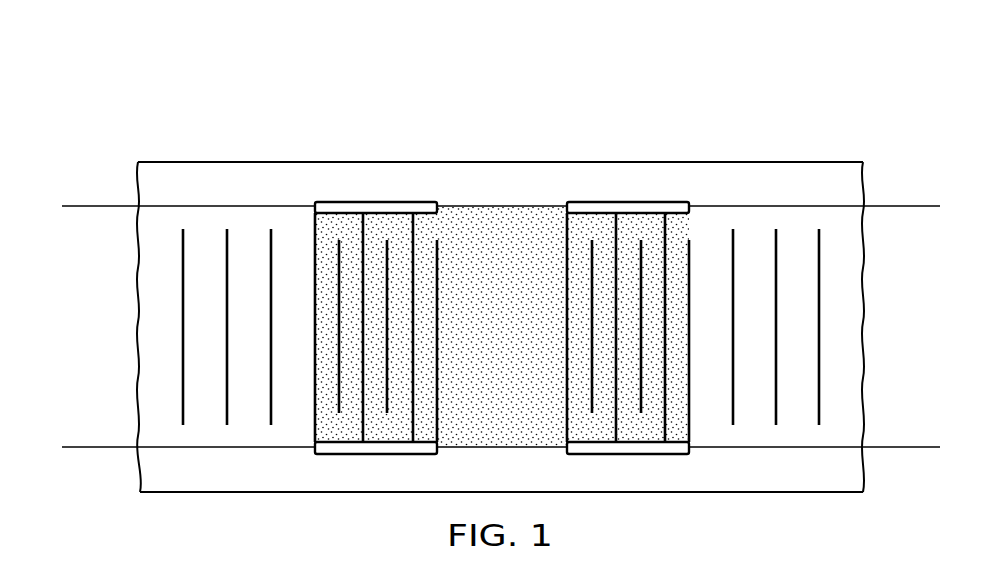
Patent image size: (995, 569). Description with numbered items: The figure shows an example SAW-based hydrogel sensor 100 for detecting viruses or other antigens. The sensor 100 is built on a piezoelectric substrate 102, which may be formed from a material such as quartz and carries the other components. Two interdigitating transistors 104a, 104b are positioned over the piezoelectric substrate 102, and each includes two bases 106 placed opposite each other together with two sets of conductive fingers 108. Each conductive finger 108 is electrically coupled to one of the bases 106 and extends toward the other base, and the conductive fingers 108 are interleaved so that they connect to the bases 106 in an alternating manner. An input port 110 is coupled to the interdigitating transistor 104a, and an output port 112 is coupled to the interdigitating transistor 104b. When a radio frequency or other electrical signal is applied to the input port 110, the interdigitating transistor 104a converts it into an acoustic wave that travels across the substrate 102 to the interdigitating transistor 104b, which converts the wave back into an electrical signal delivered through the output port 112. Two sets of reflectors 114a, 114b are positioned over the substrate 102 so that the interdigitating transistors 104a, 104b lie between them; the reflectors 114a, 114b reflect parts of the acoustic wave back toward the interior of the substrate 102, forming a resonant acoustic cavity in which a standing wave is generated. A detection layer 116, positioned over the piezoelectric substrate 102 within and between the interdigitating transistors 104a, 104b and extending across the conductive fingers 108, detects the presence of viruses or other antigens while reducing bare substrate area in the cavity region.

The SAW-based hydrogel sensor 100 is at (222, 60).
The piezoelectric substrate 102 is at (748, 159).
The interdigitating transistor 104a is at (629, 190).
The interdigitating transistor 104b is at (374, 190).
The base 106 is at (373, 455).
The conductive finger 108 is at (638, 430).
The input port 110 is at (912, 452).
The output port 112 is at (95, 450).
The reflector 114a is at (836, 322).
The reflector 114b is at (168, 339).
The detection layer 116 is at (523, 342).